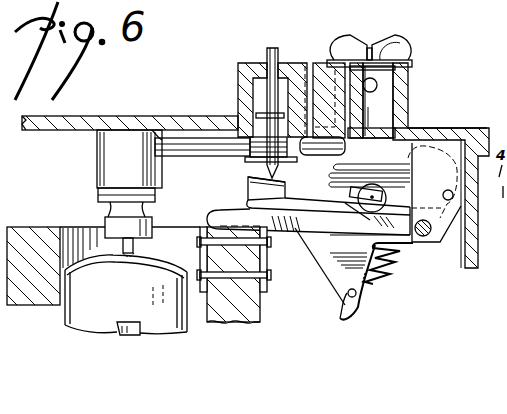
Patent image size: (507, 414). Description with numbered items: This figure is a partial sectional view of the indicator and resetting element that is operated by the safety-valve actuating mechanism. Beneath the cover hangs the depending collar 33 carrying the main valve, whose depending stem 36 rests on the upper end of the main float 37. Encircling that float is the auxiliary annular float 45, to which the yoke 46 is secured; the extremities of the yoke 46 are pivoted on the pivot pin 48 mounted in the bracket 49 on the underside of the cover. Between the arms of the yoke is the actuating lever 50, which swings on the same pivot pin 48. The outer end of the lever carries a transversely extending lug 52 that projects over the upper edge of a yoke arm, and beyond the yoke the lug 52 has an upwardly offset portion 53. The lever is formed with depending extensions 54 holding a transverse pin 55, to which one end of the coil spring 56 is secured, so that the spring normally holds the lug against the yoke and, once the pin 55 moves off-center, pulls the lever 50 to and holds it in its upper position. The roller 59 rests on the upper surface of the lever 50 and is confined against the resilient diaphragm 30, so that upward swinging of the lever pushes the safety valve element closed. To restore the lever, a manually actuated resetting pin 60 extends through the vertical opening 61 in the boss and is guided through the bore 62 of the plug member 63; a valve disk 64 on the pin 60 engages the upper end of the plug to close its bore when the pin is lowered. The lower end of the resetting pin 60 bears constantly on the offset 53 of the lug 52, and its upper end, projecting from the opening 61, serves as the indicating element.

The resilient diaphragm 30 is at (360, 171).
The depending collar 33 is at (100, 157).
The depending stem 36 is at (140, 248).
The float 37 is at (125, 302).
The auxiliary annular float 45 is at (27, 227).
The yoke 46 is at (222, 216).
The pivot pin 48 is at (421, 236).
The bracket 49 is at (458, 214).
The actuating lever 50 is at (300, 197).
The lug 52 is at (250, 192).
The offset portion 53 is at (250, 179).
The depending extensions 54 is at (313, 245).
The transverse pin 55 is at (354, 310).
The coil spring 56 is at (385, 275).
The roller 59 is at (370, 212).
The resetting pin 60 is at (271, 48).
The vertical opening 61 is at (258, 78).
The bore 62 is at (245, 145).
The plug member 63 is at (258, 137).
The valve disk 64 is at (262, 113).